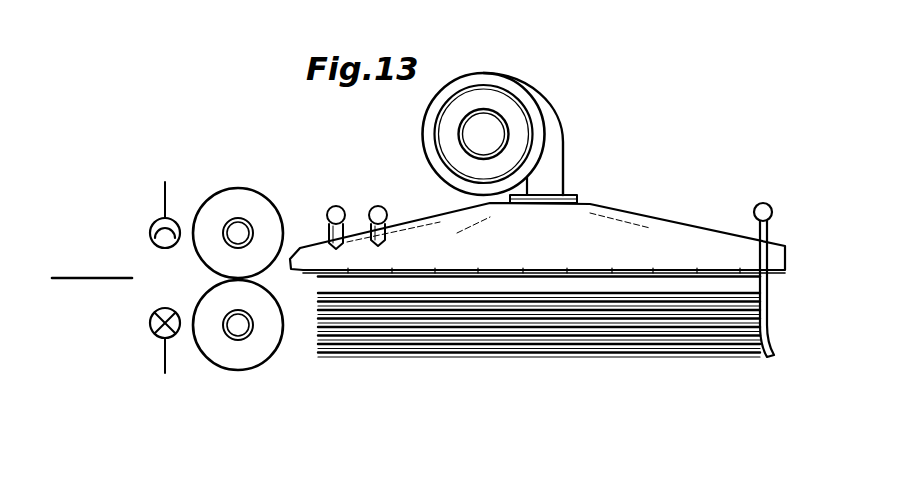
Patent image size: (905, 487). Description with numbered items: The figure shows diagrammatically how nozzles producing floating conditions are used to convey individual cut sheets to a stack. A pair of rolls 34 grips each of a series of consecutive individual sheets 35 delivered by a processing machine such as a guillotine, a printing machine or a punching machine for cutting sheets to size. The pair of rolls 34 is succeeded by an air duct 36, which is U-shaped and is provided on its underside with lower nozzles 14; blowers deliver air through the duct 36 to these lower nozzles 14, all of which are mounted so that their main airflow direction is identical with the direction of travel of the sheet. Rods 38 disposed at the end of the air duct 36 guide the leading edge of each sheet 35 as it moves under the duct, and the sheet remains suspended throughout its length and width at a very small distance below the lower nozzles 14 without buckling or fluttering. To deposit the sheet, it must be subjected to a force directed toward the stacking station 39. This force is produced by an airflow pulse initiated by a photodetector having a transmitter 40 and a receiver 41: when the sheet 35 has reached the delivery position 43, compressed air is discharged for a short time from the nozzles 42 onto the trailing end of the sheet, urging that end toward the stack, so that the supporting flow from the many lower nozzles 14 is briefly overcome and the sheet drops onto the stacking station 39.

The lower nozzles 14 is at (668, 267).
The pair of rolls 34 is at (250, 202).
The sheets 35 is at (70, 277).
The air duct 36 is at (613, 225).
The rods 38 is at (761, 203).
The stacking station 39 is at (388, 358).
The transmitter 40 is at (153, 328).
The receiver 41 is at (153, 222).
The nozzles 42 is at (338, 212).
The delivery position 43 is at (715, 272).